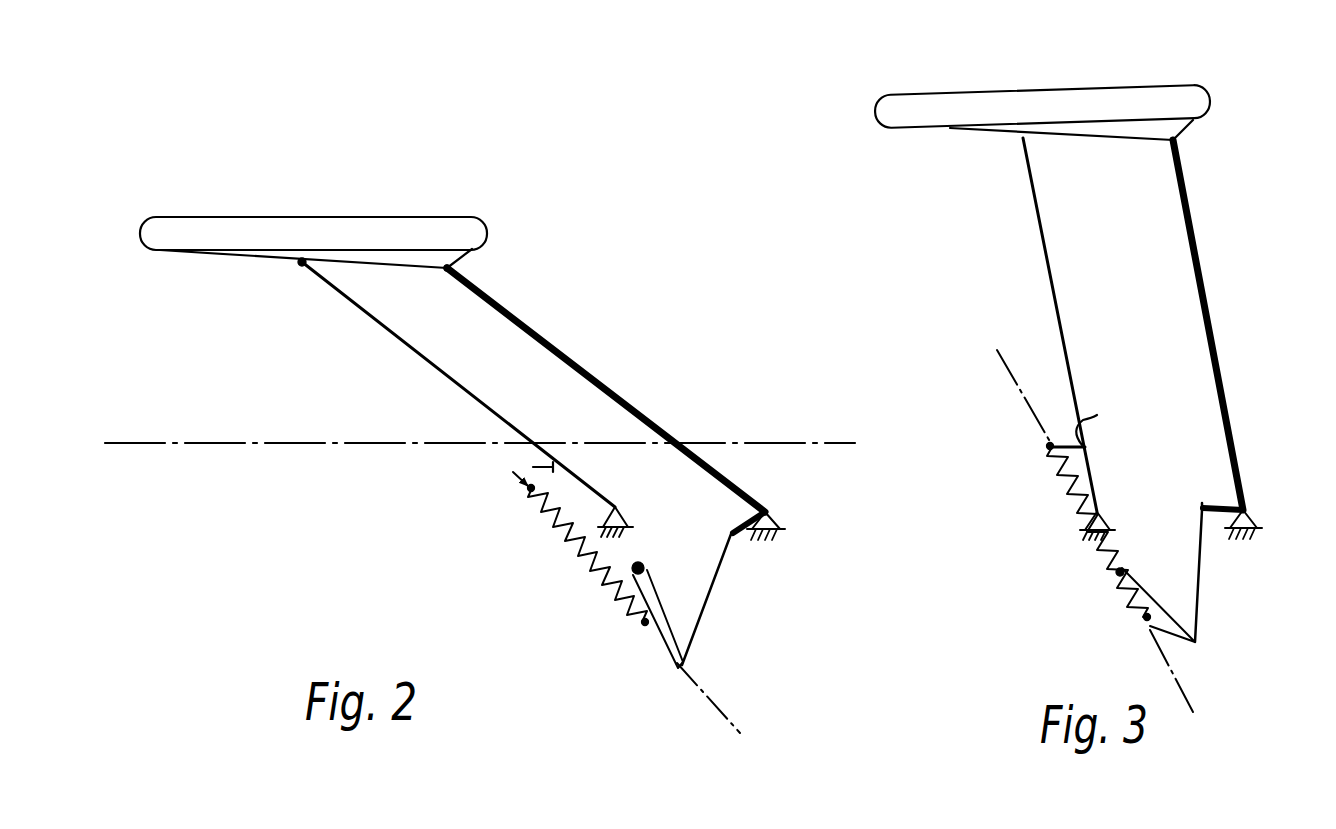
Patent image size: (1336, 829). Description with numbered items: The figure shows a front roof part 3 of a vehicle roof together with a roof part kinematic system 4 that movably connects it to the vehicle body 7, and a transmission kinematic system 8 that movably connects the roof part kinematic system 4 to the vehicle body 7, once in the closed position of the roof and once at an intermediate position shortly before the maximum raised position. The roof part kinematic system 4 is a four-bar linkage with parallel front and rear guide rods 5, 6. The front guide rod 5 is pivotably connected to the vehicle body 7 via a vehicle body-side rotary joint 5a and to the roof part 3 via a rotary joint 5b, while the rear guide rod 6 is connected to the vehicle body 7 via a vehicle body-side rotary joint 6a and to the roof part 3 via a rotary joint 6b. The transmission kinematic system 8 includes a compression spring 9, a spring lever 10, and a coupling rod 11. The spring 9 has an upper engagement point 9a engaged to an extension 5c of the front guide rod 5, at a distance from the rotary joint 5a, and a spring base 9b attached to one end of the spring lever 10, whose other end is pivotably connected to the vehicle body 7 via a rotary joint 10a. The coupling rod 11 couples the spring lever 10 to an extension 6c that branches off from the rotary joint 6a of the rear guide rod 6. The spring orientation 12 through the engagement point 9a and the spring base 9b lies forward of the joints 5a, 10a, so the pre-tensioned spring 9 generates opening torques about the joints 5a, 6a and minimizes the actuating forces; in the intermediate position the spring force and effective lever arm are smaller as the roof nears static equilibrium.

In FIG. 2, the front roof part 3 is at (290, 226).
In FIG. 3, the front roof part 3 is at (1003, 103).
In FIG. 2, the roof part kinematic system 4 is at (375, 361).
In FIG. 2, the front guide rod 5 is at (433, 362).
In FIG. 3, the front guide rod 5 is at (1060, 277).
In FIG. 2, the vehicle body-side rotary joint 5a is at (618, 507).
In FIG. 3, the vehicle body-side rotary joint 5a is at (1100, 510).
In FIG. 2, the rotary joint 5b is at (300, 265).
In FIG. 2, the extension of front guide rod 5c is at (532, 480).
In FIG. 3, the extension of front guide rod 5c is at (1096, 424).
In FIG. 2, the rear guide rod 6 is at (548, 342).
In FIG. 3, the rear guide rod 6 is at (1200, 262).
In FIG. 2, the vehicle body-side rotary joint 6a is at (770, 510).
In FIG. 3, the vehicle body-side rotary joint 6a is at (1250, 508).
In FIG. 2, the rotary joint 6b is at (453, 267).
In FIG. 2, the extension of rear guide rod 6c is at (732, 513).
In FIG. 3, the extension of rear guide rod 6c is at (1223, 509).
In FIG. 2, the vehicle body 7 is at (785, 445).
In FIG. 2, the transmission kinematic system 8 is at (535, 546).
In FIG. 2, the compression spring 9 is at (578, 563).
In FIG. 3, the compression spring 9 is at (1073, 497).
In FIG. 2, the upper engagement point 9a is at (528, 490).
In FIG. 3, the upper engagement point 9a is at (1045, 447).
In FIG. 2, the spring base 9b is at (634, 625).
In FIG. 3, the spring base 9b is at (1143, 620).
In FIG. 2, the spring lever 10 is at (657, 642).
In FIG. 3, the spring lever 10 is at (1173, 642).
In FIG. 2, the vehicle body-side rotary joint 10a is at (644, 566).
In FIG. 3, the vehicle body-side rotary joint 10a is at (1113, 575).
In FIG. 2, the coupling rod 11 is at (707, 607).
In FIG. 3, the coupling rod 11 is at (1198, 572).
In FIG. 2, the spring orientation 12 is at (723, 708).
In FIG. 3, the spring orientation 12 is at (1014, 378).